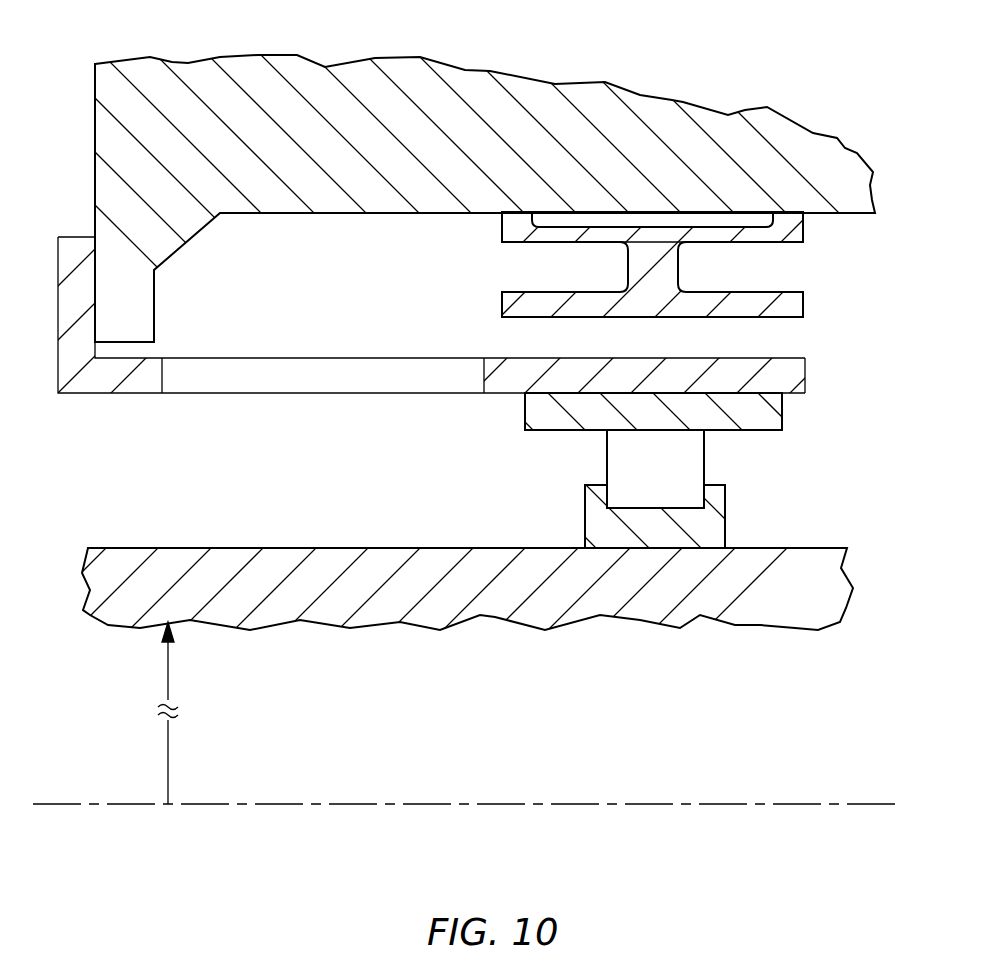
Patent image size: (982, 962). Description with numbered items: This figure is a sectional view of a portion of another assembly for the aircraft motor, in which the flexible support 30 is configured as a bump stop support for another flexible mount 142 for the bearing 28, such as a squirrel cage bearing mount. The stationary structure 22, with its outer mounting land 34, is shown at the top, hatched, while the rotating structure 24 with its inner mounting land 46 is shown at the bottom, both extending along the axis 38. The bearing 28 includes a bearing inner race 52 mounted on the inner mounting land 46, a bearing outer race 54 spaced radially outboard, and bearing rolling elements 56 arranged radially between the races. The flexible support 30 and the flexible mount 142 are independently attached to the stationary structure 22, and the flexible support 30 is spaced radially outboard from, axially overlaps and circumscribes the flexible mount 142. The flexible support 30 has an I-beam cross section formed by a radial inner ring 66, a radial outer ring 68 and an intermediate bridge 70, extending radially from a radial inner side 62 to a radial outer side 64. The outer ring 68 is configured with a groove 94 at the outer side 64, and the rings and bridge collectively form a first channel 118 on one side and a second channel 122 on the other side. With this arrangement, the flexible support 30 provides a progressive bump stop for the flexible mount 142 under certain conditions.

The stationary structure 22 is at (491, 191).
The outer mounting land 34 is at (852, 187).
The radial outer side 64 is at (791, 212).
The groove 94 is at (662, 218).
The radial outer ring 68 is at (476, 231).
The radial inner ring 66 is at (481, 308).
The intermediate bridge 70 is at (612, 261).
The second channel 122 is at (508, 270).
The first channel 118 is at (782, 259).
The flexible support 30 is at (641, 232).
The radial inner side 62 is at (695, 332).
The flexible mount 142 is at (832, 378).
The bearing outer race 54 is at (783, 412).
The bearing rolling elements 56 is at (704, 469).
The bearing inner race 52 is at (727, 525).
The bearing 28 is at (506, 300).
The rotating structure 24 is at (491, 481).
The inner mounting land 46 is at (850, 588).
The axis 38 is at (85, 806).